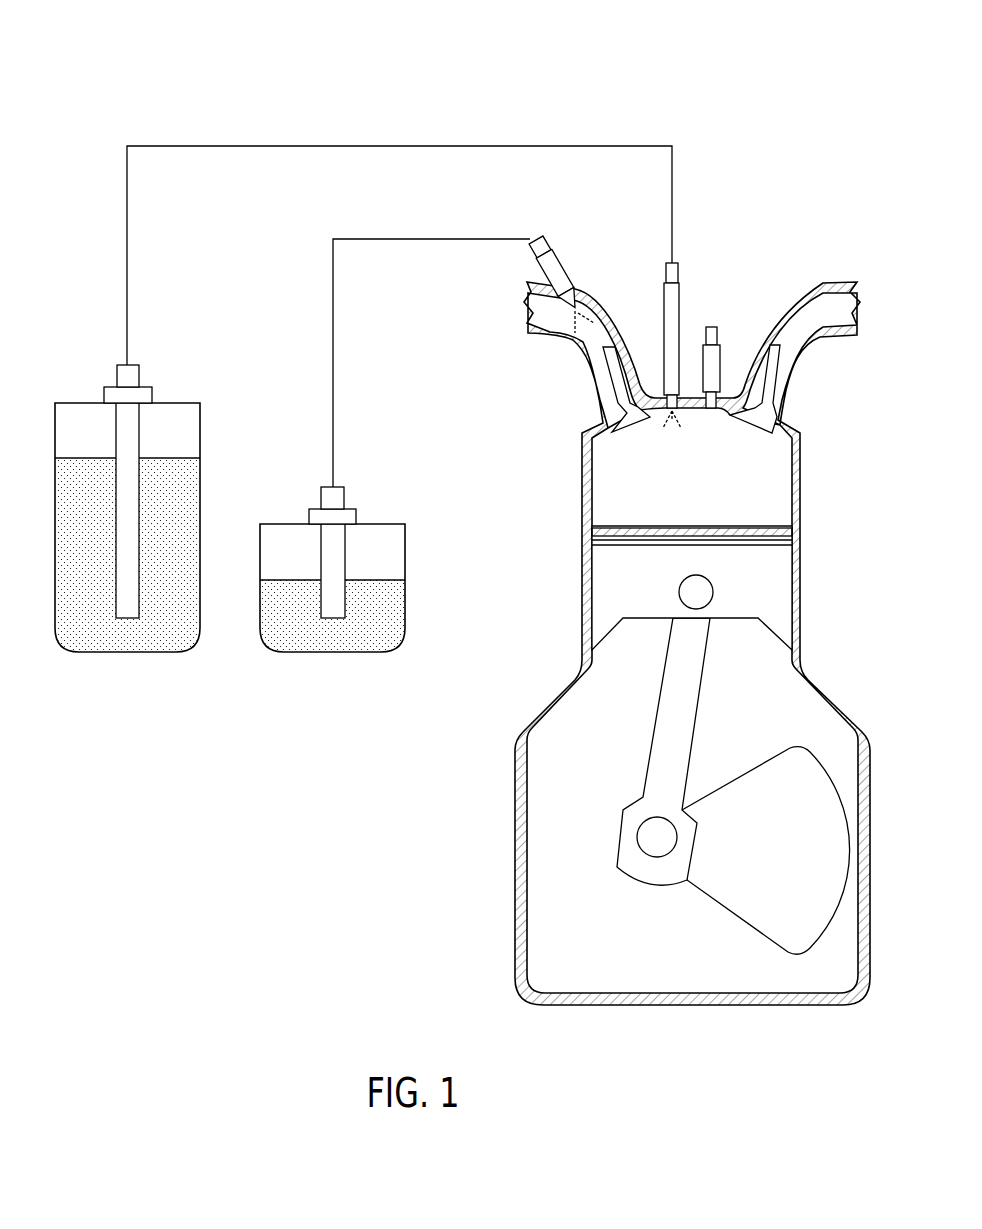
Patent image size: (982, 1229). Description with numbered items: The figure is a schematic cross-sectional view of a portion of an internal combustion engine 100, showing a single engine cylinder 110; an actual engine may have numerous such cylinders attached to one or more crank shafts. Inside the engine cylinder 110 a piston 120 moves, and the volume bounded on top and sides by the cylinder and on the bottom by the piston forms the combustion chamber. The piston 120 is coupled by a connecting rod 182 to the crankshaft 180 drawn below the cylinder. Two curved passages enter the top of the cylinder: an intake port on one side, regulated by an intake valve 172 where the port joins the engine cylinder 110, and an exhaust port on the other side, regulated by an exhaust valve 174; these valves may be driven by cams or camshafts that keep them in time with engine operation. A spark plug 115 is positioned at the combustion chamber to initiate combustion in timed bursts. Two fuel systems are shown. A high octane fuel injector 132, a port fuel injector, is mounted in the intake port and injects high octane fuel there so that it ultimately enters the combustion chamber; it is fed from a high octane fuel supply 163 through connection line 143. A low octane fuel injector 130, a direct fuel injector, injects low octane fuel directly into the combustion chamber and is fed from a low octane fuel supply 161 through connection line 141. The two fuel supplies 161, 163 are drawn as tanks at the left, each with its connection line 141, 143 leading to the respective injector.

The internal combustion engine 100 is at (745, 90).
The engine cylinder 110 is at (803, 597).
The spark plug 115 is at (717, 327).
The piston 120 is at (672, 526).
The low octane fuel injector 130 is at (680, 268).
The high octane fuel injector 132 is at (556, 256).
The connection line 141 is at (200, 146).
The connection line 143 is at (416, 239).
The low octane fuel supply 161 is at (118, 653).
The high octane fuel supply 163 is at (332, 653).
The intake valve 172 is at (636, 425).
The exhaust valve 174 is at (748, 425).
The crankshaft 180 is at (760, 763).
The connecting rod 182 is at (648, 750).